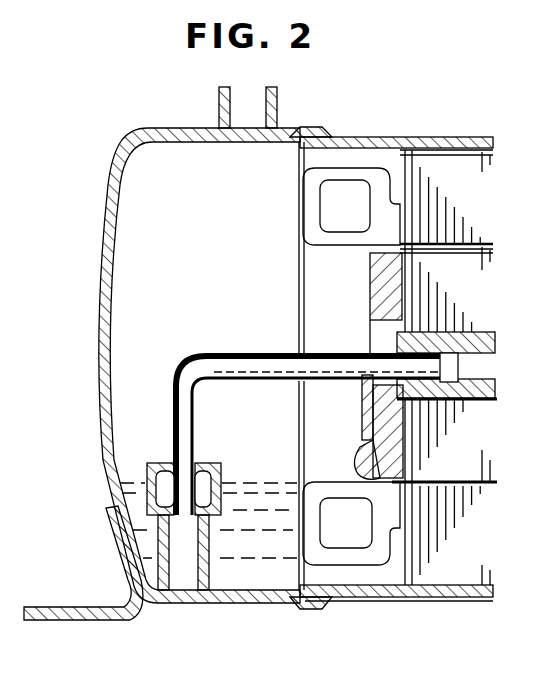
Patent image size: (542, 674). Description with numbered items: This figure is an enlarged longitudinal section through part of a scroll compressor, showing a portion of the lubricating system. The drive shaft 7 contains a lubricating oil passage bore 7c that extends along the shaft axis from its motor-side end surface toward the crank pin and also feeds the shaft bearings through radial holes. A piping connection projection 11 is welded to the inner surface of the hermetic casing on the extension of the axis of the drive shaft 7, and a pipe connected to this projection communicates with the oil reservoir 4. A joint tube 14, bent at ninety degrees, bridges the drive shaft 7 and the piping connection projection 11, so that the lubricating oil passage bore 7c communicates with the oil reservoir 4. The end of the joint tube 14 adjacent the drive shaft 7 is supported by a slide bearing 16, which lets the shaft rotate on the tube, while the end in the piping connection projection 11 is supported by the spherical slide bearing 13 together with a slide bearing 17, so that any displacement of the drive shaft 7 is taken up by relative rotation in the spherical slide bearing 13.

The oil reservoir 4 is at (247, 577).
The drive shaft 7 is at (372, 340).
The lubricating oil passage bore 7c is at (372, 403).
The piping connection projection 11 is at (150, 466).
The spherical slide bearing 13 is at (204, 466).
The joint tube 14 is at (237, 353).
The slide bearing 16 is at (400, 384).
The slide bearing 17 is at (176, 468).